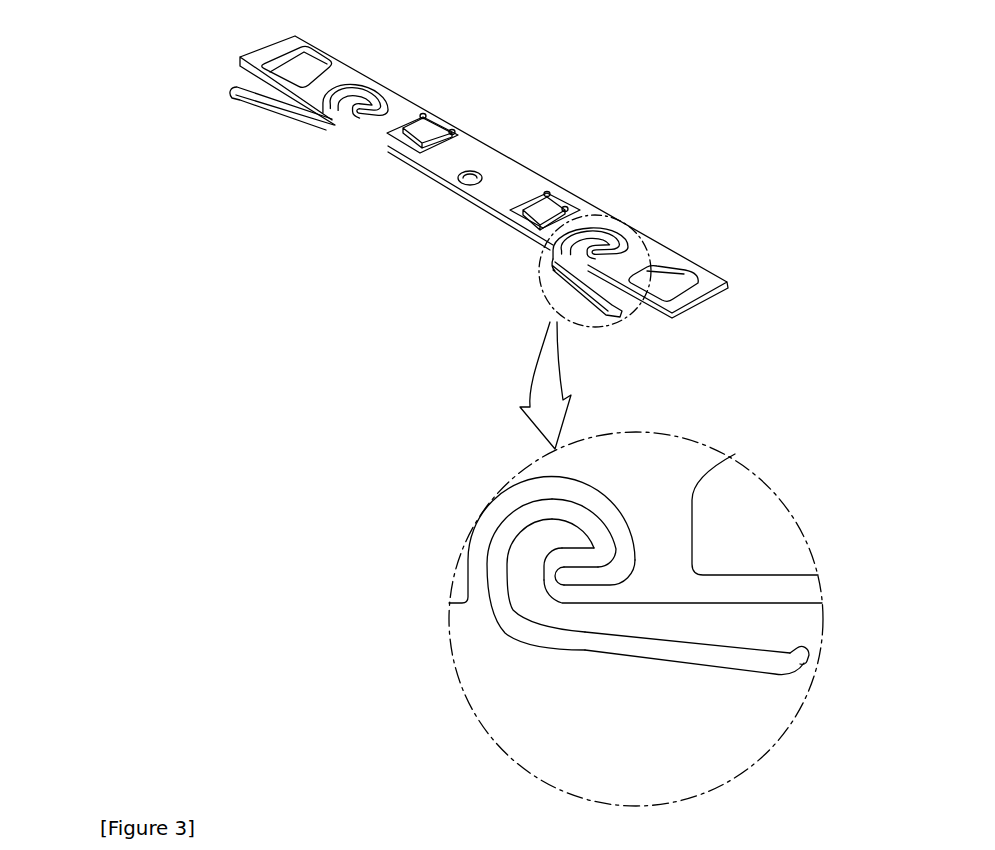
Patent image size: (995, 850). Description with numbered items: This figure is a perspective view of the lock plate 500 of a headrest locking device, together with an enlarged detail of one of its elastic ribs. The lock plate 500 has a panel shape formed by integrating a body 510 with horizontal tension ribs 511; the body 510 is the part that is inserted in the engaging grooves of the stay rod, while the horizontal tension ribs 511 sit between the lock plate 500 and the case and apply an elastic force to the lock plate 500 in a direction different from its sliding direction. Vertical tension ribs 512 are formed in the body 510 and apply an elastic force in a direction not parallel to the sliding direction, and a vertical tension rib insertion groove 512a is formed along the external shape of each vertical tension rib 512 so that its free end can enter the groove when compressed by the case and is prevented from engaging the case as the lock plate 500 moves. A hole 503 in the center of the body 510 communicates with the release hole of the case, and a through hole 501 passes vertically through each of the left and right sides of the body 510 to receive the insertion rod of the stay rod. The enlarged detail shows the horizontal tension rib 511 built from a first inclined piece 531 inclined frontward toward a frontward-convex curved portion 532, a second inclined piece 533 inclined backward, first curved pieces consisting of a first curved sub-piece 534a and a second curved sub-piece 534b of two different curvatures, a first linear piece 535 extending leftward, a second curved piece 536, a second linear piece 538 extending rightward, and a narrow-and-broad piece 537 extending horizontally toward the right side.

The lock plate 500 is at (235, 312).
The through hole 501 is at (309, 63).
The hole 503 is at (468, 184).
The body 510 is at (607, 218).
The horizontal tension rib 511 is at (279, 134).
The vertical tension rib 512 is at (540, 182).
The vertical tension rib insertion groove 512a is at (402, 145).
The first inclined piece 531 is at (794, 659).
The curved portion 532 is at (768, 695).
The second inclined piece 533 is at (655, 653).
The 1-1 curved piece 534a is at (505, 607).
The 1-2 curved piece 534b is at (610, 537).
The first linear piece 535 is at (577, 556).
The second curved piece 536 is at (546, 582).
The narrow-and-broad piece 537 is at (628, 574).
The second linear piece 538 is at (594, 592).